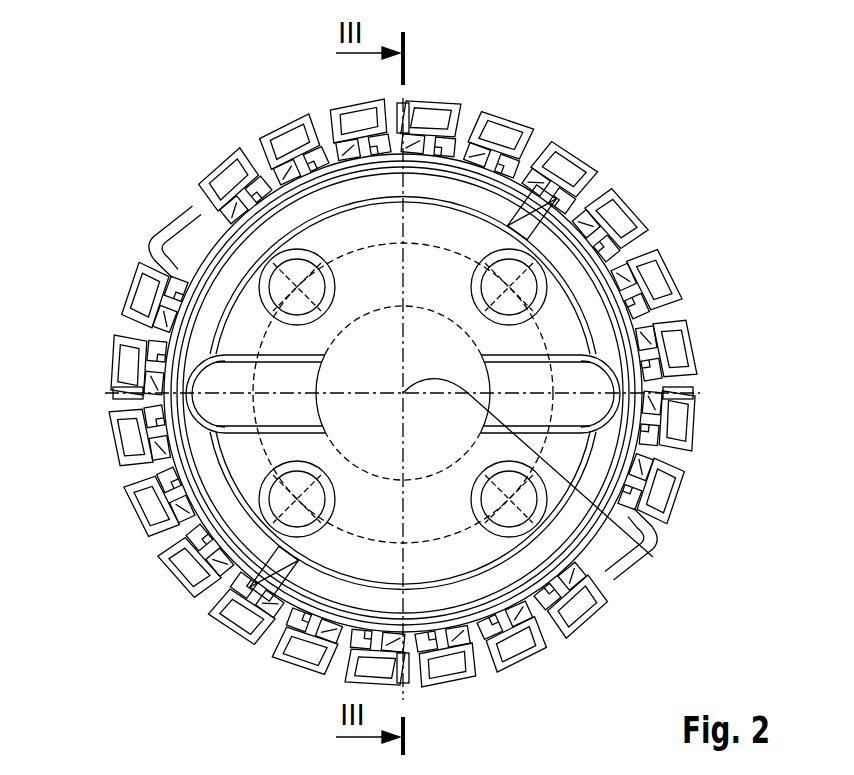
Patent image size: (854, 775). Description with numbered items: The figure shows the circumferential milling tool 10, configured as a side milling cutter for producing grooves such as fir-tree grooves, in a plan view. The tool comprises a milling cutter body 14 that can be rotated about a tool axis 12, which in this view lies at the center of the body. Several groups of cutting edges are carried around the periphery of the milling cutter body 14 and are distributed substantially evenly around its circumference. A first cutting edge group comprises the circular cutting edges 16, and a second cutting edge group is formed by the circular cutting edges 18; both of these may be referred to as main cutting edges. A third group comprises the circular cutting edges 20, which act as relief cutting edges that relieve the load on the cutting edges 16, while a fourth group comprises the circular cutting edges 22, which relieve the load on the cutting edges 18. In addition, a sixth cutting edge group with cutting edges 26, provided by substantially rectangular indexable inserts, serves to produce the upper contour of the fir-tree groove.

The circumferential milling tool 10 is at (690, 108).
The tool axis 12 is at (645, 545).
The milling cutter body 14 is at (433, 185).
The cutting edges 16 is at (608, 183).
The cutting edges 18 is at (492, 118).
The cutting edges 20 is at (262, 150).
The cutting edges 22 is at (400, 105).
The cutting edges 26 is at (500, 223).